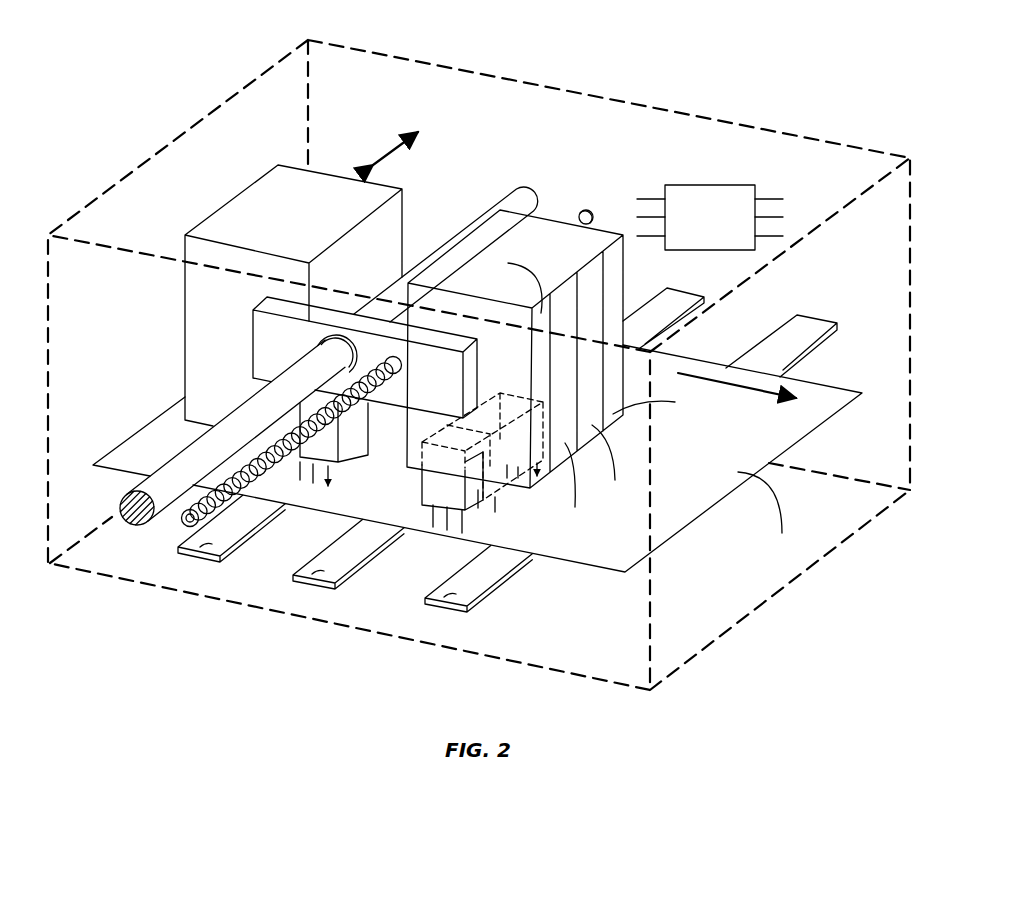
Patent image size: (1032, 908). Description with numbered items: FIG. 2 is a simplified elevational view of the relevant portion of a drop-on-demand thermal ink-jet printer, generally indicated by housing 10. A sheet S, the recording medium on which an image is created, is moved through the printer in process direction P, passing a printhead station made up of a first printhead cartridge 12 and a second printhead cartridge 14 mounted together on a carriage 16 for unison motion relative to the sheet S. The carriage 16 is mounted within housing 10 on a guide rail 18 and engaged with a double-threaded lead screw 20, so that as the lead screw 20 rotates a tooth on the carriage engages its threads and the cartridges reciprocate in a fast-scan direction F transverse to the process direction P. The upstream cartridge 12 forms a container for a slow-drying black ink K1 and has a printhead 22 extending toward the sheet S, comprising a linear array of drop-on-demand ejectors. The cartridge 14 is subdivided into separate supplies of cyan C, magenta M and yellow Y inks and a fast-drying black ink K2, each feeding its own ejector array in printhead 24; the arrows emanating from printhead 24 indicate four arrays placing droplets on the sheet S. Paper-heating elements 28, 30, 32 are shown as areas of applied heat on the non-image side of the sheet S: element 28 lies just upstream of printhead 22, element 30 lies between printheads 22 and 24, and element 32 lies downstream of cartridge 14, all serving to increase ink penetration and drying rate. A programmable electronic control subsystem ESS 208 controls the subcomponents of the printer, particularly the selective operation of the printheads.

The housing 10 is at (779, 132).
The first printhead cartridge 12 is at (286, 294).
The second printhead cartridge 14 is at (531, 335).
The carriage 16 is at (270, 333).
The guide rail 18 is at (190, 455).
The lead screw 20 is at (180, 512).
The printhead 22 is at (353, 438).
The printhead 24 is at (440, 493).
The paper-heating element 28 is at (188, 555).
The paper-heating element 30 is at (300, 580).
The paper-heating element 32 is at (432, 607).
The electronic control subsystem (ESS) 208 is at (710, 185).
The slow-drying black ink K1 is at (362, 258).
The fast-drying black ink K2 is at (661, 409).
The yellow ink supply Y is at (513, 283).
The cyan ink supply C is at (608, 467).
The magenta ink supply M is at (575, 489).
The sheet S is at (477, 458).
The process direction P is at (749, 393).
The fast-scan direction F is at (395, 143).